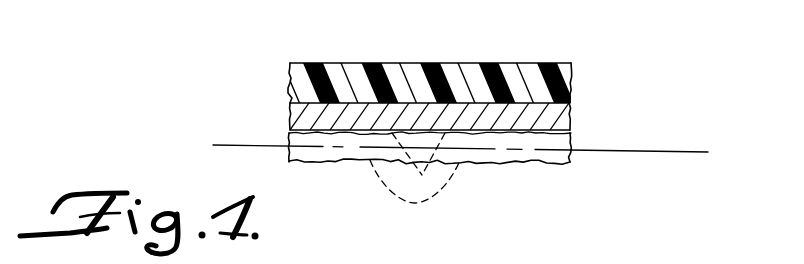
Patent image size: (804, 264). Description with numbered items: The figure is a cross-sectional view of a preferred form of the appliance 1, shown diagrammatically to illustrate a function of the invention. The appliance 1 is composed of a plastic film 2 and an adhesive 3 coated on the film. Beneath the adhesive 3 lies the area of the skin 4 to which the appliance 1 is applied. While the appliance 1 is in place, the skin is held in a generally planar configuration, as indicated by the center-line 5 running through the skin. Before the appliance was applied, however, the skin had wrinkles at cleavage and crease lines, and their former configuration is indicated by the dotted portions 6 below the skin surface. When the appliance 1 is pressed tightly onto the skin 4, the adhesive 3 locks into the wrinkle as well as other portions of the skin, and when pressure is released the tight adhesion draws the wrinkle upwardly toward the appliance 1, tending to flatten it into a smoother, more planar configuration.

The appliance 1 is at (497, 66).
The plastic film 2 is at (616, 92).
The adhesive 3 is at (570, 124).
The area of the skin 4 is at (552, 162).
The center-line 5 is at (262, 144).
The dotted portions 6 is at (440, 187).